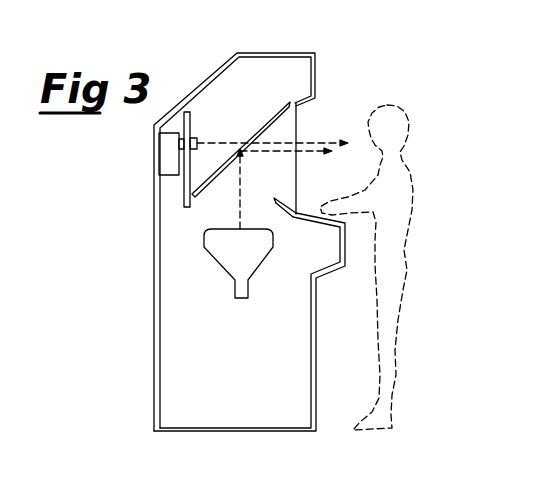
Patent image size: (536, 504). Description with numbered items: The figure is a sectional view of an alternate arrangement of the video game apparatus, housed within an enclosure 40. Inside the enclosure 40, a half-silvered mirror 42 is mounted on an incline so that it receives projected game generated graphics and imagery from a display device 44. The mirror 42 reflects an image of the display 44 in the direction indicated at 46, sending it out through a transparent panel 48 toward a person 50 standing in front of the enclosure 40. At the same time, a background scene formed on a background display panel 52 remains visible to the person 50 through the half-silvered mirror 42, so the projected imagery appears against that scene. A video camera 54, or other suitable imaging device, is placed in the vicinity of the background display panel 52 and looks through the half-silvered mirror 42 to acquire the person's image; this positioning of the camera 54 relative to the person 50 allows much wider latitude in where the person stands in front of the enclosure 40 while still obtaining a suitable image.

The enclosure 40 is at (267, 53).
The half-silvered mirror 42 is at (252, 133).
The display device 44 is at (226, 229).
The direction of projected image 46 is at (268, 152).
The transparent panel 48 is at (298, 118).
The person 50 is at (412, 173).
The background display panel 52 is at (190, 120).
The video camera 54 is at (166, 154).